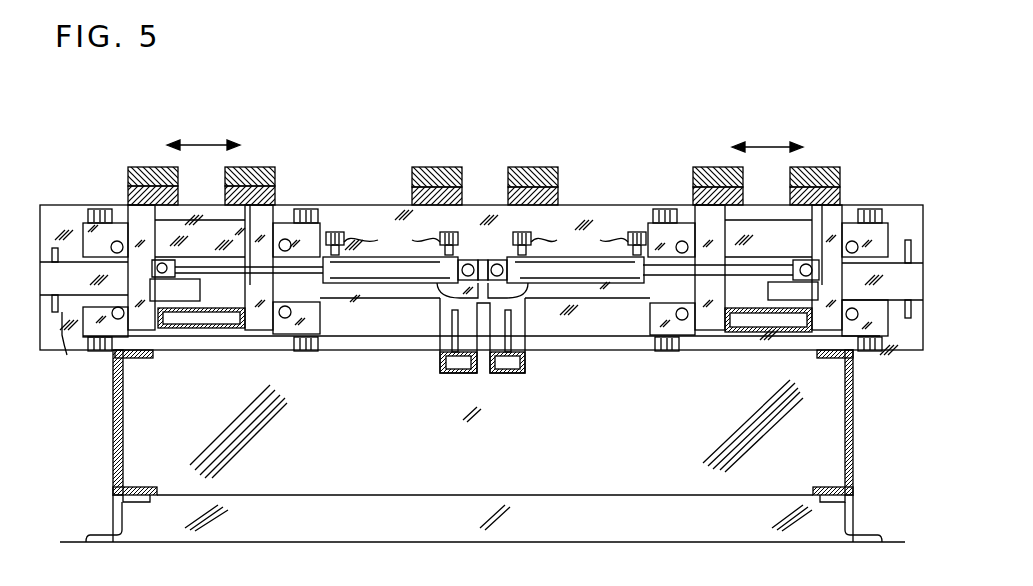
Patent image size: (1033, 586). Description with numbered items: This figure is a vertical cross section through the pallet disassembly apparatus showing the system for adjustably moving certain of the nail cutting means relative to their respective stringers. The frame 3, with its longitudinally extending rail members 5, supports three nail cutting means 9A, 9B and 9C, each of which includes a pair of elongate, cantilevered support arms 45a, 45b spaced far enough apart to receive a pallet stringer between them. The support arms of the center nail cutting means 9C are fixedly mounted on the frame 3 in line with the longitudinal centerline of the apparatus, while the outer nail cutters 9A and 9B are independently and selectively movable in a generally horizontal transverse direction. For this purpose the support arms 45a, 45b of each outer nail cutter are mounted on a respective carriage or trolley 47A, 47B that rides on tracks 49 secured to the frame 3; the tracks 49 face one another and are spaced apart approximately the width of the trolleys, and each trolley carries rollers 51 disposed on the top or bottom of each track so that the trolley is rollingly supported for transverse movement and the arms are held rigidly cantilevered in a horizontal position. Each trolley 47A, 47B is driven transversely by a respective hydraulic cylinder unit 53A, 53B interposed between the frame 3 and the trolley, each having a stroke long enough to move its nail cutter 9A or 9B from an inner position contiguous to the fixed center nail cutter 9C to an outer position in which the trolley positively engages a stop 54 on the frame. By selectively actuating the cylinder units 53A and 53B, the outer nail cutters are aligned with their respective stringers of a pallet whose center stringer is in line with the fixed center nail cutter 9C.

The frame 3 is at (868, 480).
The rail member 5 is at (112, 440).
The nail cutting means 9A is at (771, 133).
The nail cutting means 9B is at (217, 136).
The center nail cutting means 9C is at (490, 153).
The support arm 45a is at (253, 166).
The support arm 45b is at (147, 166).
The carriage or trolley 47A is at (858, 204).
The carriage or trolley 47B is at (118, 201).
The track 49 is at (66, 355).
The roller 51 is at (83, 226).
The hydraulic cylinder unit 53A is at (579, 254).
The hydraulic cylinder unit 53B is at (386, 254).
The stop 54 is at (55, 247).